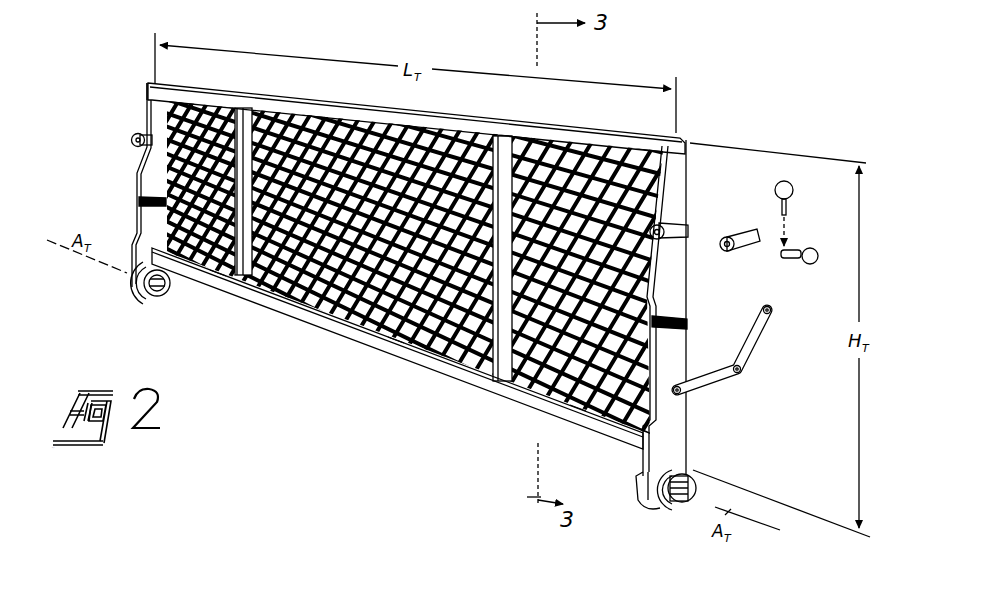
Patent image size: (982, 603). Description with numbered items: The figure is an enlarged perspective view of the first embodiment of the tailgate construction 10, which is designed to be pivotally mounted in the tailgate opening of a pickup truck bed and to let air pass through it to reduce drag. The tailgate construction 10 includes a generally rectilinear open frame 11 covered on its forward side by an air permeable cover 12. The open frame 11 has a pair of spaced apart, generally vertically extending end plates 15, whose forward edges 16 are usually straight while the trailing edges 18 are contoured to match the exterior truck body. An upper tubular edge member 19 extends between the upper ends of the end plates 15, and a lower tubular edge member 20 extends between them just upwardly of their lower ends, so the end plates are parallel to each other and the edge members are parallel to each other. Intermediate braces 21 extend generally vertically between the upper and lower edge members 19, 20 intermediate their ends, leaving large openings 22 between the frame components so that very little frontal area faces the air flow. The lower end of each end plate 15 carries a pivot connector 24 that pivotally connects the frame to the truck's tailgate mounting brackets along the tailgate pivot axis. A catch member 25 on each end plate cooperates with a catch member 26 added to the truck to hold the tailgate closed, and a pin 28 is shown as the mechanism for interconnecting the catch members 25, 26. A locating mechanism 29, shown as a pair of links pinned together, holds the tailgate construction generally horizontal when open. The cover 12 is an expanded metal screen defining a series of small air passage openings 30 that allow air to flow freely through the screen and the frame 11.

The tailgate construction 10 is at (702, 112).
The open frame 11 is at (143, 85).
The air permeable cover 12 is at (290, 297).
The end plates 15 is at (139, 202).
The forward edges 16 is at (687, 296).
The trailing edges 18 is at (137, 179).
The upper tubular edge member 19 is at (316, 102).
The lower tubular edge member 20 is at (440, 372).
The intermediate braces 21 is at (241, 275).
The large openings 22 is at (218, 273).
The pivot connector 24 is at (131, 291).
The catch member 25 is at (134, 137).
The catch member 26 is at (753, 232).
The locking pin 28 is at (787, 259).
The locating mechanism 29 is at (752, 341).
The air passage openings 30 is at (457, 138).